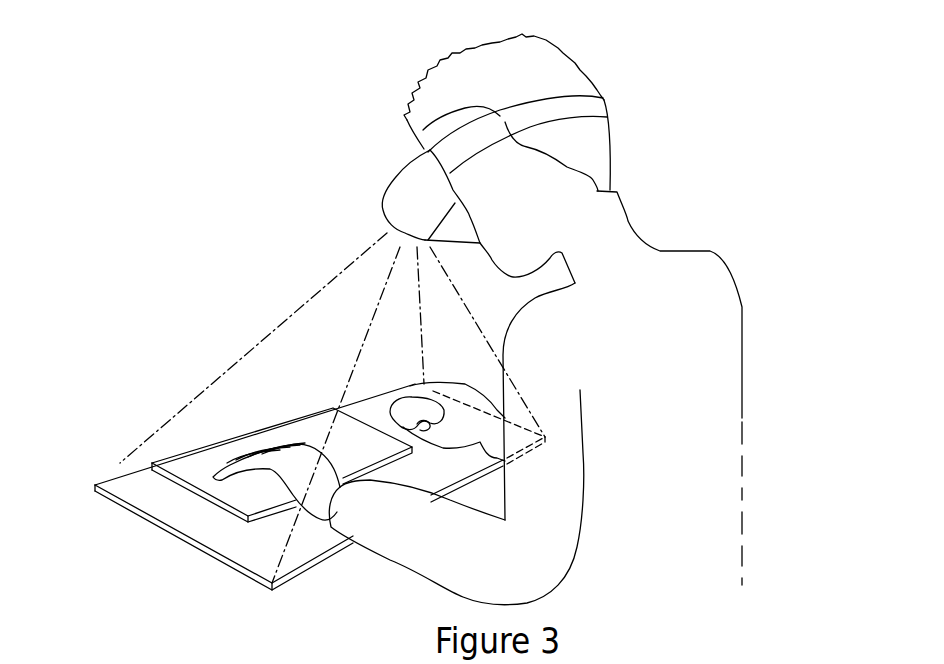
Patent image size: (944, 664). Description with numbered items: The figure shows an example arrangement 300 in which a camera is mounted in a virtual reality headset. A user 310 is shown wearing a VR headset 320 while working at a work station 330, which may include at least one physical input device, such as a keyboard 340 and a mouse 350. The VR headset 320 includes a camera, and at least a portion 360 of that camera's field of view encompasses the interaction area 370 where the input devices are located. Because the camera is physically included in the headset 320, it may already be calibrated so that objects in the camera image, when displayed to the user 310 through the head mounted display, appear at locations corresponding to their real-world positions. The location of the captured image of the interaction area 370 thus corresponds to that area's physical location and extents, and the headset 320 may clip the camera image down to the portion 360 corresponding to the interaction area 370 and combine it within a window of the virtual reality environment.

The example arrangement 300 is at (394, 332).
The user 310 is at (499, 319).
The VR headset 320 is at (451, 149).
The work station 330 is at (274, 496).
The keyboard 340 is at (207, 465).
The mouse 350 is at (376, 340).
The portion of field of view 360 is at (317, 408).
The interaction area 370 is at (320, 507).